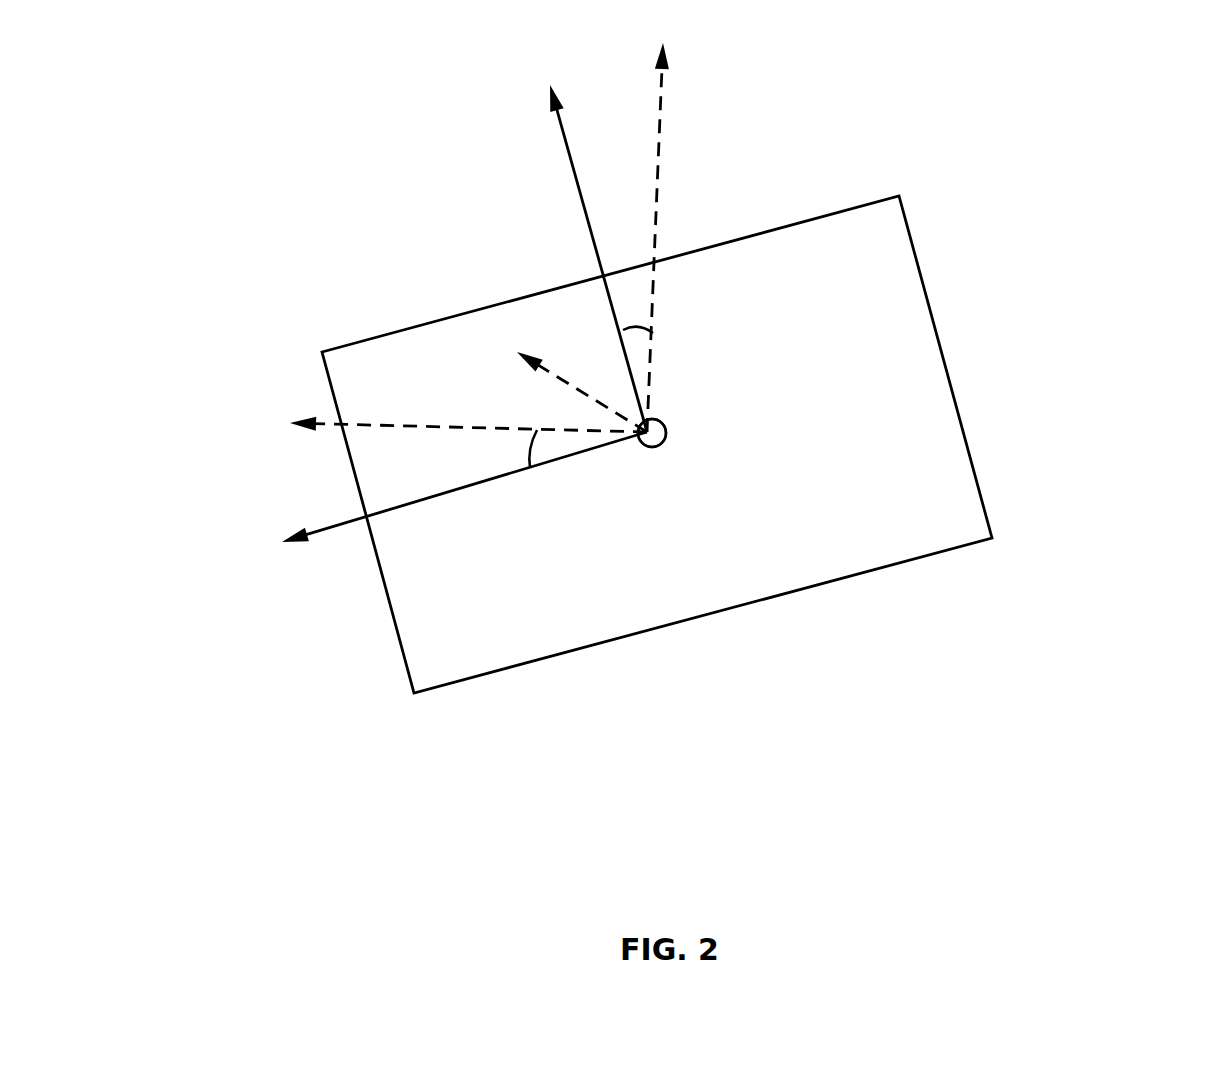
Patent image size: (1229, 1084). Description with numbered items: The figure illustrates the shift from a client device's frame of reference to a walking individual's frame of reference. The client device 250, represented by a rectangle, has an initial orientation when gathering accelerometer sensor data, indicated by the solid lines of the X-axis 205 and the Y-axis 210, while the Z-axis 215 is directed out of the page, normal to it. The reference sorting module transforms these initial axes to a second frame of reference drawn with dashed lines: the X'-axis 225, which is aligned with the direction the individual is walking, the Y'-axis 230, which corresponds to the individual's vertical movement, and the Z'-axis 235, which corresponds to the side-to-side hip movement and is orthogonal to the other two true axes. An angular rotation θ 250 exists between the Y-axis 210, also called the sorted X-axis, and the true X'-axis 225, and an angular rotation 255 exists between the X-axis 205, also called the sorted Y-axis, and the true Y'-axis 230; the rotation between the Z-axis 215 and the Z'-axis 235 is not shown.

The X-axis 205 is at (577, 198).
The Y-axis 210 is at (330, 540).
The Z-axis 215 is at (668, 430).
The X'-axis 225 is at (368, 417).
The Y'-axis 230 is at (675, 187).
The Z'-axis 235 is at (547, 358).
The client device / angular rotation θ 250 is at (555, 708).
The angular rotation 255 is at (640, 325).